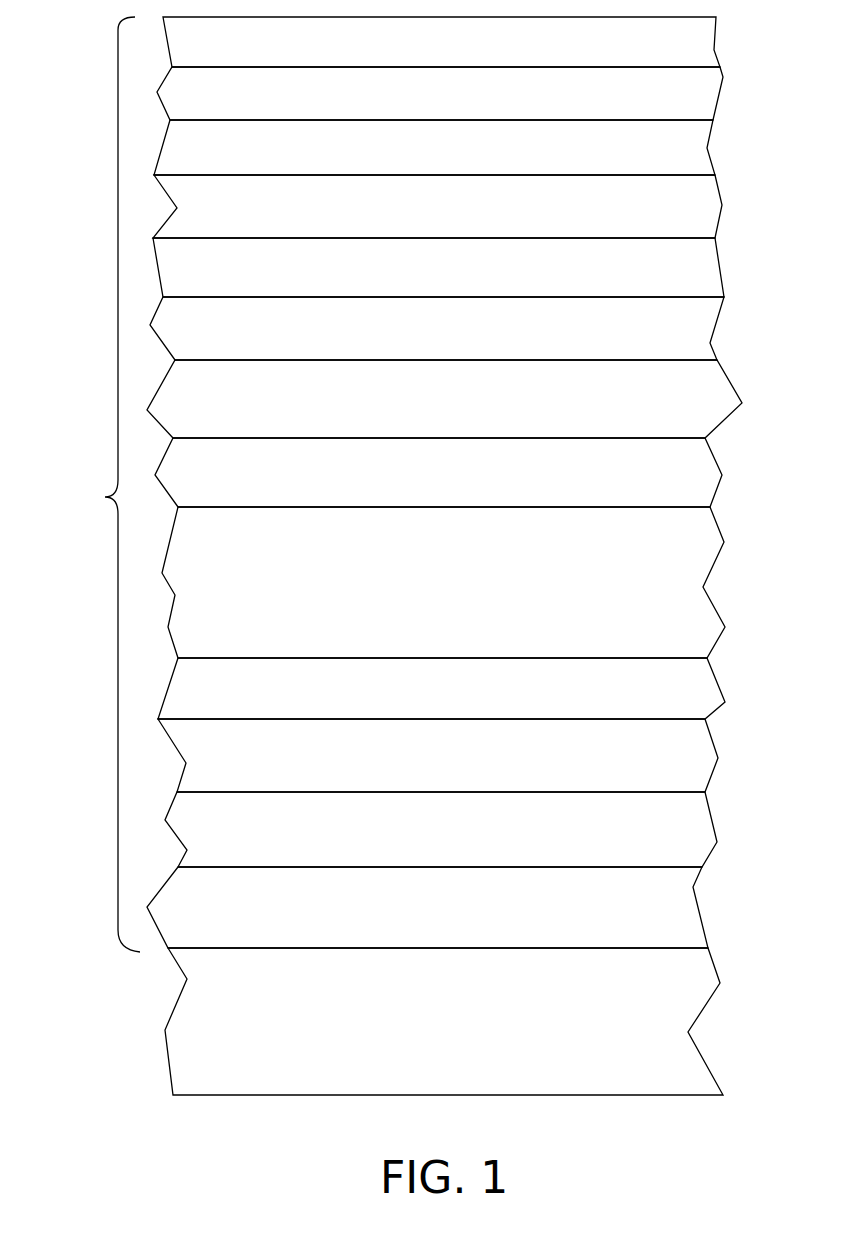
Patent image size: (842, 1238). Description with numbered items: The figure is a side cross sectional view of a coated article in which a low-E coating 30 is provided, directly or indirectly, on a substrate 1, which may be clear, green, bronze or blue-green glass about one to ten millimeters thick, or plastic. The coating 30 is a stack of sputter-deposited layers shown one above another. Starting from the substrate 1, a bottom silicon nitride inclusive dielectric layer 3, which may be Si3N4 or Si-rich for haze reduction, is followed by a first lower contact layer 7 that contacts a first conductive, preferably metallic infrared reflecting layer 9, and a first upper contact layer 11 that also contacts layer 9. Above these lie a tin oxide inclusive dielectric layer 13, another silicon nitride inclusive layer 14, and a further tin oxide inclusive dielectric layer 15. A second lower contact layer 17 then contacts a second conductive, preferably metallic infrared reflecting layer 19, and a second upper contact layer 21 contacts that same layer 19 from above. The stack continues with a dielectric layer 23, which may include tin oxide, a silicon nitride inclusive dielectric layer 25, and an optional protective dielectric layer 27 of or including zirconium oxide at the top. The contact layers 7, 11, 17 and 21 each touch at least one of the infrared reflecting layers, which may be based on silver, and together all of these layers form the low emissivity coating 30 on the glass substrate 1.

The substrate 1 is at (670, 1015).
The bottom silicon nitride inclusive dielectric layer 3 is at (680, 920).
The first lower contact layer 7 is at (680, 830).
The first infrared reflecting layer 9 is at (680, 755).
The first upper contact layer 11 is at (690, 688).
The tin oxide inclusive dielectric layer 13 is at (680, 577).
The silicon nitride inclusive layer 14 is at (690, 465).
The tin oxide inclusive dielectric layer 15 is at (690, 400).
The second lower contact layer 17 is at (693, 322).
The second infrared reflecting layer 19 is at (693, 268).
The second upper contact layer 21 is at (688, 205).
The dielectric layer 23 is at (682, 150).
The silicon nitride inclusive dielectric layer 25 is at (690, 90).
The protective dielectric layer 27 is at (690, 42).
The low-E coating 30 is at (106, 496).